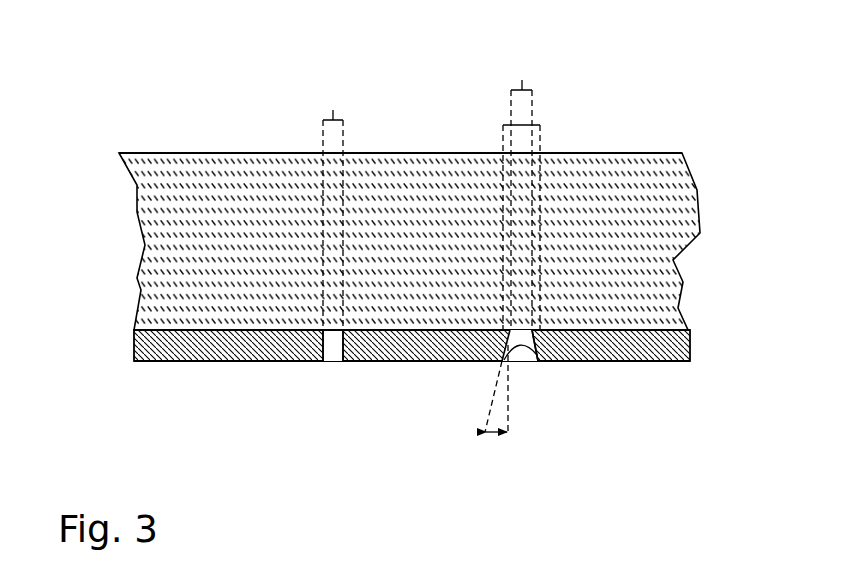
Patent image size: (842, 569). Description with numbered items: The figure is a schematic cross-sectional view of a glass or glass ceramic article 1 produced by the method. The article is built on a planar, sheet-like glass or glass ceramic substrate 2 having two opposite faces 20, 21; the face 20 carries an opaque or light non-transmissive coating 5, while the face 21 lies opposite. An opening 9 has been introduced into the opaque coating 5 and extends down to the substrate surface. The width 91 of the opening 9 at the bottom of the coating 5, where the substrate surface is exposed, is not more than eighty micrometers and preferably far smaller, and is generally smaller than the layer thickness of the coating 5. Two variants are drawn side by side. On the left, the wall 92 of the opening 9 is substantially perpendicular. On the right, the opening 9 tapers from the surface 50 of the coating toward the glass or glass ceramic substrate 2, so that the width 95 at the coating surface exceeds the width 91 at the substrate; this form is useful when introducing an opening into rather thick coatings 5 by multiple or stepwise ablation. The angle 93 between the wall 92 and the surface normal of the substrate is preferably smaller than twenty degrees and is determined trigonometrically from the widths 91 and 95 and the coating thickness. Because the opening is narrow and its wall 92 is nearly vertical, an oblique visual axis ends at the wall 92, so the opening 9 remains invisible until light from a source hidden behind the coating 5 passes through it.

The glass or glass ceramic article 1 is at (414, 270).
The glass or glass ceramic substrate 2 is at (303, 180).
The face of the substrate 21 is at (395, 153).
The face of the substrate 20 is at (198, 333).
The opaque coating 5 is at (258, 345).
The surface of the coating 50 is at (640, 362).
The opening 9 is at (330, 344).
The width of the opening at the substrate 91 is at (436, 188).
The wall of the opening 92 is at (331, 362).
The angle 93 is at (497, 434).
The width of the opening at the coating surface 95 is at (522, 120).